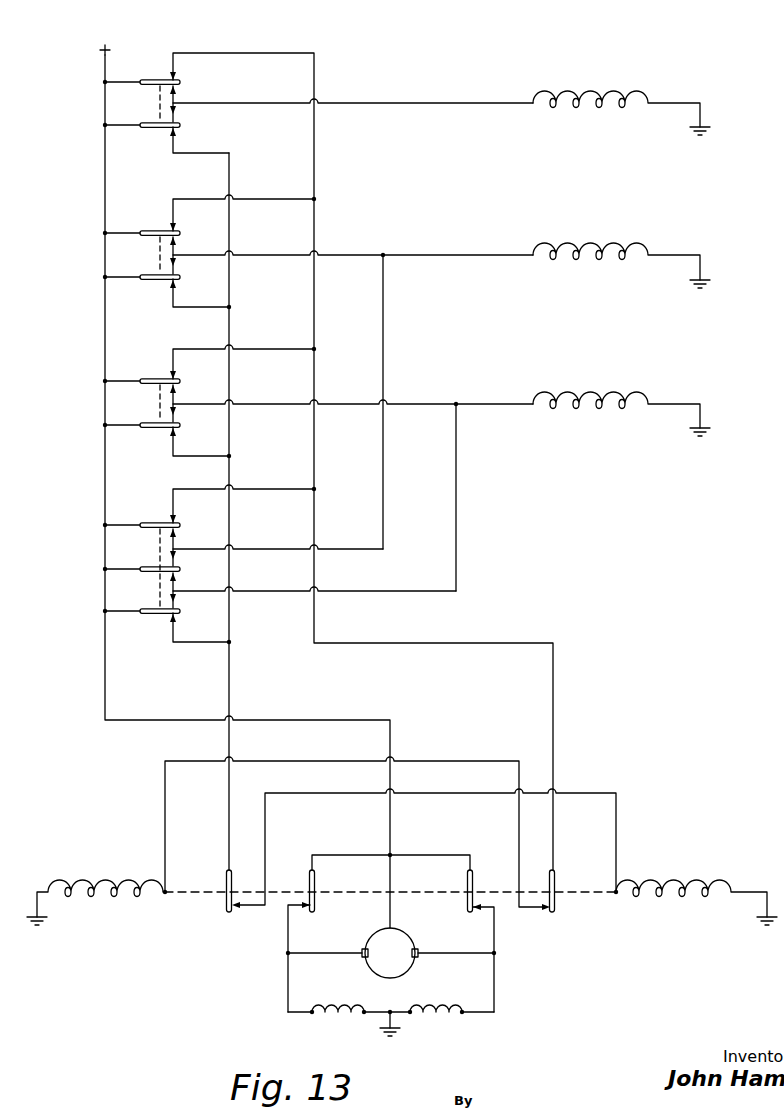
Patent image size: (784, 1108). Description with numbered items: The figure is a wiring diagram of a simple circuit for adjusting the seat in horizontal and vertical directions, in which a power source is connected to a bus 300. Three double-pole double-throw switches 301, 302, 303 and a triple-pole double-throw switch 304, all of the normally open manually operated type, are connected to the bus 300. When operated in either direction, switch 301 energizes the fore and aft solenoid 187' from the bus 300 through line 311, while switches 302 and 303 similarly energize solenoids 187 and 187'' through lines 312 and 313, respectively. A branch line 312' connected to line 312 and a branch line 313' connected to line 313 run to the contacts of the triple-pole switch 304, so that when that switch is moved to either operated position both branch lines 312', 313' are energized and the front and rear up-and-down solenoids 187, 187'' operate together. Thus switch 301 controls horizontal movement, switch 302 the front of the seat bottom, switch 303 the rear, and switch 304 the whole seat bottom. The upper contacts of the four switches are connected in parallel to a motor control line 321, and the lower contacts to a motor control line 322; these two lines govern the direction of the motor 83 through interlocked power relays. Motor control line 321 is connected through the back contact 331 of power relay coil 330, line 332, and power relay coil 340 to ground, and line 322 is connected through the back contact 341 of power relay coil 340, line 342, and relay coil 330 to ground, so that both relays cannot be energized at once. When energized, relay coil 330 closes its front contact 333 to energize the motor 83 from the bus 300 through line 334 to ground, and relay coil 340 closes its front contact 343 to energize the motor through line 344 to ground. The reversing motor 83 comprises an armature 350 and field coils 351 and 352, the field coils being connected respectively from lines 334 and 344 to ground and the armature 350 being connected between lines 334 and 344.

The bus 300 is at (105, 343).
The double-pole double-throw switch 301 is at (160, 100).
The double-pole double-throw switch 302 is at (160, 254).
The double-pole double-throw switch 303 is at (160, 402).
The triple-pole double-throw switch 304 is at (160, 548).
The line 311 is at (343, 103).
The line 312 is at (353, 237).
The line 313 is at (353, 383).
The branch line 312' is at (305, 402).
The branch line 313' is at (341, 497).
The motor control line 321 is at (213, 53).
The motor control line 322 is at (229, 175).
The fore and aft solenoid 187' is at (621, 89).
The solenoid 187 is at (621, 243).
The solenoid 187'' is at (621, 390).
The line 332 is at (313, 760).
The line 342 is at (418, 793).
The power relay coil 340 is at (125, 881).
The power relay coil 330 is at (672, 882).
The back contact 341 is at (226, 910).
The front contact 343 is at (318, 912).
The front contact 333 is at (465, 913).
The back contact 331 is at (553, 912).
The line 334 is at (288, 930).
The line 344 is at (497, 945).
The armature 350 is at (385, 928).
The motor 83 is at (280, 985).
The field coil 352 is at (337, 1020).
The field coil 351 is at (432, 1020).